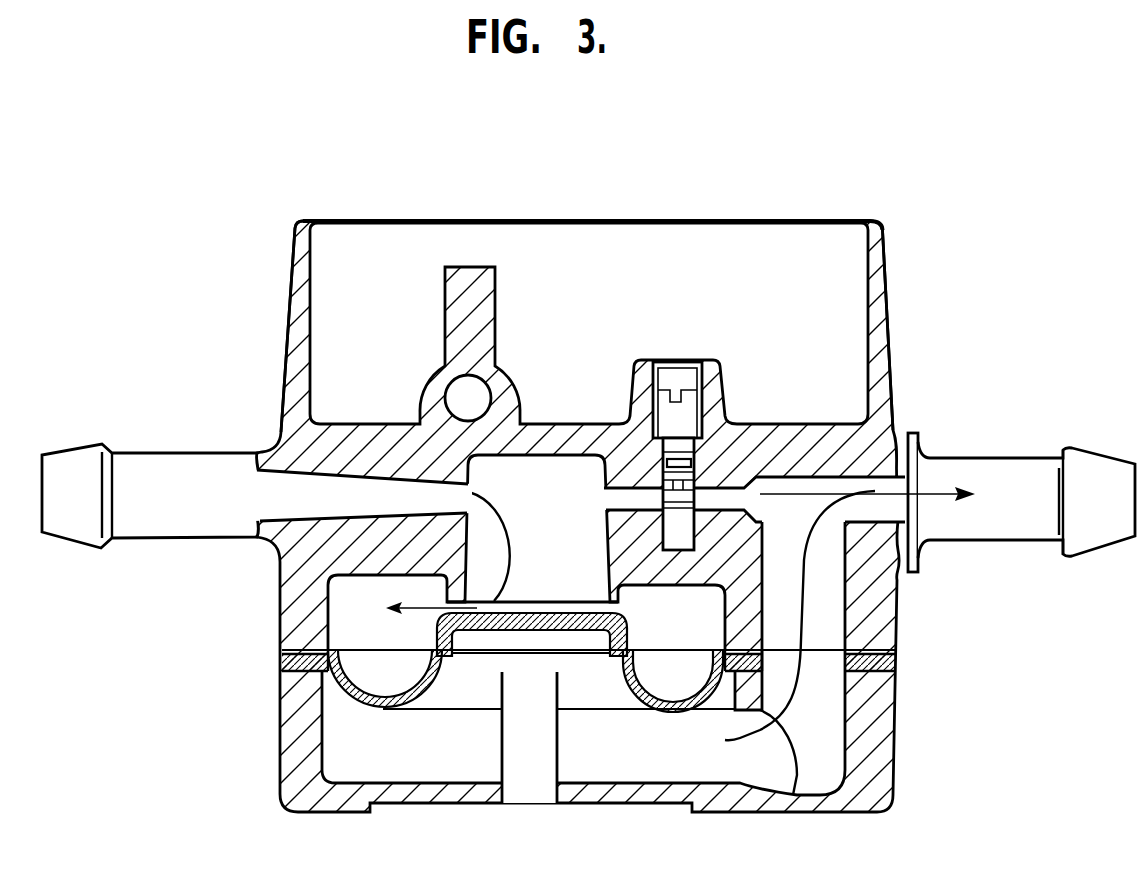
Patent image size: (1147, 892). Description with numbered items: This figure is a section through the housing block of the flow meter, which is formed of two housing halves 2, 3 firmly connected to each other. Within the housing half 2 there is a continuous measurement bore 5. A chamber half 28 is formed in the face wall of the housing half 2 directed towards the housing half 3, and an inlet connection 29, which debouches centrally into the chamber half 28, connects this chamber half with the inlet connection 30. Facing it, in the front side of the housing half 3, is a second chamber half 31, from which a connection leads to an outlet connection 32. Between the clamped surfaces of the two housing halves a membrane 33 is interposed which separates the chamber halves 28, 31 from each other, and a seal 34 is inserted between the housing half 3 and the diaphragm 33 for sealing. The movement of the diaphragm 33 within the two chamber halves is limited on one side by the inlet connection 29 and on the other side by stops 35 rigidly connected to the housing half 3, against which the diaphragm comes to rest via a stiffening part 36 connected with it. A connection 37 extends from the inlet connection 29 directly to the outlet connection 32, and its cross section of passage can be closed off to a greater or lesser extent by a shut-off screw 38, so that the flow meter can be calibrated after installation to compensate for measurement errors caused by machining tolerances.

The housing half 2 is at (292, 280).
The housing half 3 is at (293, 778).
The measurement bore 5 is at (481, 396).
The chamber half 28 is at (345, 625).
The inlet connection 29 is at (447, 583).
The inlet connection 30 is at (80, 470).
The second chamber half 31 is at (333, 730).
The outlet connection 32 is at (1002, 481).
The membrane 33 is at (382, 708).
The seal 34 is at (895, 664).
The stops 35 is at (518, 752).
The stiffening part 36 is at (490, 632).
The connection 37 is at (618, 497).
The shut-off screw 38 is at (672, 413).